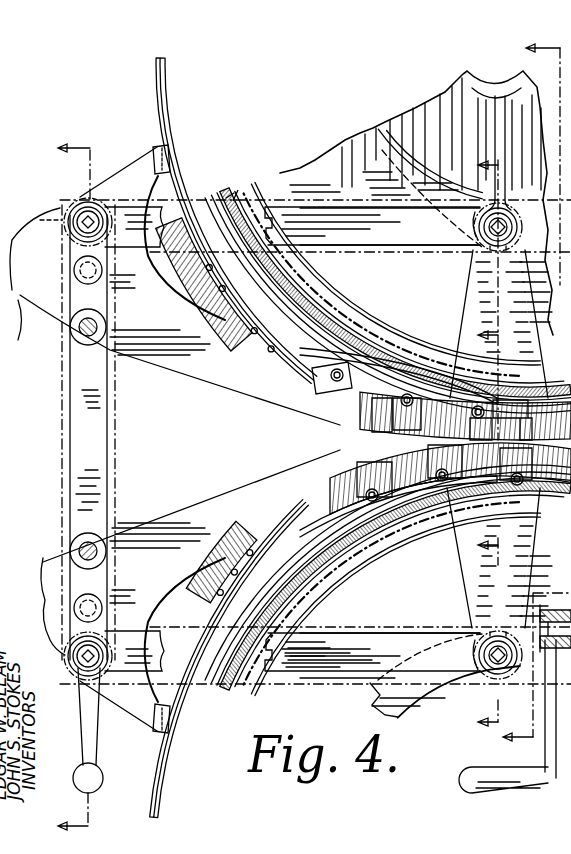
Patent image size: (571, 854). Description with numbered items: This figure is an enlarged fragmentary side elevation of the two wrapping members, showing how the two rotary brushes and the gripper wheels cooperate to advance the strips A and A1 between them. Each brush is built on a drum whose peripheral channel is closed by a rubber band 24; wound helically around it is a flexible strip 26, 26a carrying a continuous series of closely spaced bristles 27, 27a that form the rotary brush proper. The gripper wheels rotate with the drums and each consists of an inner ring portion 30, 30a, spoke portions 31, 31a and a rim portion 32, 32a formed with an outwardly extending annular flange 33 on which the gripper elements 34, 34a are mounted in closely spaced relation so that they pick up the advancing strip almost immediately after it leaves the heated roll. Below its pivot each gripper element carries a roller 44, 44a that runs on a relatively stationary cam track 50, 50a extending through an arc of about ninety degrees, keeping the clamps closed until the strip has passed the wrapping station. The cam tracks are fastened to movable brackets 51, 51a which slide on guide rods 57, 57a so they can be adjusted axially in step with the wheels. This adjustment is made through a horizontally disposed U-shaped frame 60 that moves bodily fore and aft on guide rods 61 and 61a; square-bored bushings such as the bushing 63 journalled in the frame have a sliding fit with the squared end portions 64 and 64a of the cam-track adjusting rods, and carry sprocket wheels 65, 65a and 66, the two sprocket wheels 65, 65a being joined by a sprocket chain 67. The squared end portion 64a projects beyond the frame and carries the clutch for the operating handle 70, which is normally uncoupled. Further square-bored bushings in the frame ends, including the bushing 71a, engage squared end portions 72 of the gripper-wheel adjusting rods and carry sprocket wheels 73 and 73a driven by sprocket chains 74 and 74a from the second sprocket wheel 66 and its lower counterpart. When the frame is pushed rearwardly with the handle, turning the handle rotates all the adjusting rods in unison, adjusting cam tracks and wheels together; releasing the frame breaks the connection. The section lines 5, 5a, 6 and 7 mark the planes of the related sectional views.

The strip A is at (129, 162).
The strip A1 is at (193, 590).
The section line 5 is at (62, 490).
The section line 5a is at (528, 393).
The section line 6 is at (476, 298).
The section line 7 is at (476, 634).
The rubber band 24 is at (233, 196).
The flexible strip 26 is at (278, 275).
The flexible strip 26a is at (338, 598).
The bristles 27 is at (197, 286).
The bristles 27a is at (262, 524).
The inner ring portion 30 is at (372, 190).
The inner ring portion 30a is at (372, 690).
The spoke portions 31 is at (472, 312).
The spoke portions 31a is at (470, 578).
The rim portion 32 is at (322, 338).
The rim portion 32a is at (430, 520).
The annular flange 33 is at (512, 408).
The gripper elements 34 is at (384, 459).
The gripper elements 34a is at (531, 476).
The roller 44 is at (412, 385).
The roller 44a is at (345, 480).
The cam track 50 is at (170, 178).
The cam track 50a is at (185, 682).
The movable brackets 51 is at (221, 392).
The movable brackets 51a is at (204, 500).
The guide rods 57 is at (70, 327).
The guide rods 57a is at (78, 548).
The U-shaped frame 60 is at (100, 430).
The guide rod 61 is at (76, 266).
The guide rod 61a is at (102, 604).
The square-bored bushing 63 is at (555, 619).
The squared end portion 64 is at (82, 216).
The squared end portion 64a is at (96, 653).
The sprocket wheel 65 is at (62, 212).
The sprocket wheel 65a is at (62, 630).
The sprocket wheel 66 is at (40, 220).
The sprocket chain 67 is at (62, 352).
The operating handle 70 is at (96, 724).
The square-bored bushing 71a is at (480, 668).
The squared end portion 72 is at (492, 242).
The sprocket wheel 73 is at (483, 235).
The sprocket wheel 73a is at (474, 660).
The sprocket chain 74 is at (298, 200).
The sprocket chain 74a is at (380, 596).